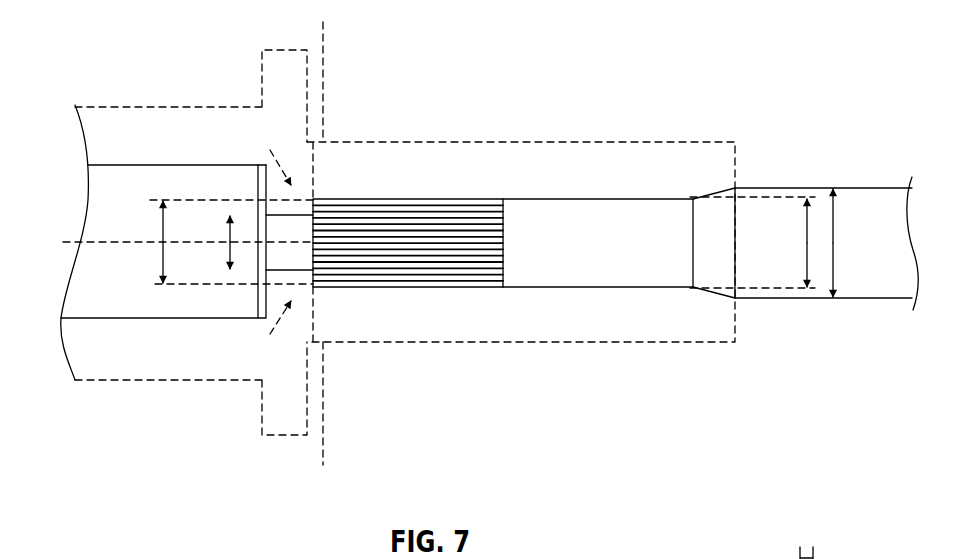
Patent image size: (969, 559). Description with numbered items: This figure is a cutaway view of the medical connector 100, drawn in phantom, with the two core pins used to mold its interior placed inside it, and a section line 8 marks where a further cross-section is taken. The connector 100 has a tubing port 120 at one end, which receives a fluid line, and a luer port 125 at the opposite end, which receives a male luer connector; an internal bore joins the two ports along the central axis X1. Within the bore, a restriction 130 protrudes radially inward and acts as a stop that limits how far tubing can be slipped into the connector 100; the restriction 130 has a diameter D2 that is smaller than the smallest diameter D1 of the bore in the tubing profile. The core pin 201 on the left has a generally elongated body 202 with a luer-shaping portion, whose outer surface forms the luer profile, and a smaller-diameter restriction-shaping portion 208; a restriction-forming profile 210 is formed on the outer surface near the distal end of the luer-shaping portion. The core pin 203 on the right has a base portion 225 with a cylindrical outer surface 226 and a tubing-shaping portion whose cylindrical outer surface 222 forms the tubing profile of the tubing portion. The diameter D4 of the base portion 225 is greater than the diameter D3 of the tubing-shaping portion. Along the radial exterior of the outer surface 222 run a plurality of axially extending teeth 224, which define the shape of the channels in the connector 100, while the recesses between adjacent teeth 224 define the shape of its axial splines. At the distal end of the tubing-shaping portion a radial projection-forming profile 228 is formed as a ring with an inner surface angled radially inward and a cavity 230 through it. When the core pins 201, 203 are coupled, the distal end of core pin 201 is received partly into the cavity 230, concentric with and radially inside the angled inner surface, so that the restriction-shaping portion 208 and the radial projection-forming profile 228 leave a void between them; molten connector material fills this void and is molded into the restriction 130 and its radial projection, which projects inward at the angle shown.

The section line 8- 8 is at (323, 22).
The medical connector 100 is at (430, 99).
The tubing port 120 is at (715, 230).
The luer port 125 is at (106, 198).
The restriction 130 is at (297, 280).
The core pin 201 is at (124, 162).
The elongated body 202 is at (182, 166).
The core pin 203 is at (538, 294).
The restriction-shaping portion 208 is at (273, 213).
The restriction-forming profile 210 is at (269, 277).
The cylindrical outer surface 222 is at (540, 198).
The axially extending teeth 224 is at (445, 257).
The base portion 225 is at (812, 186).
The cylindrical outer surface 226 is at (607, 288).
The radial projection-forming profile 228 is at (304, 198).
The cavity 230 is at (310, 272).
The central axis X1 is at (63, 242).
The smallest diameter D1 is at (160, 242).
The diameter D2 is at (229, 226).
The diameter D3 is at (806, 235).
The diameter D4 is at (835, 235).